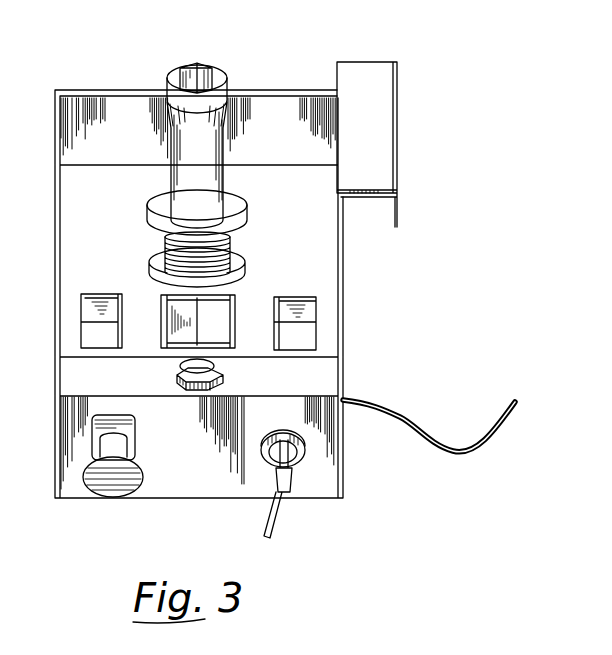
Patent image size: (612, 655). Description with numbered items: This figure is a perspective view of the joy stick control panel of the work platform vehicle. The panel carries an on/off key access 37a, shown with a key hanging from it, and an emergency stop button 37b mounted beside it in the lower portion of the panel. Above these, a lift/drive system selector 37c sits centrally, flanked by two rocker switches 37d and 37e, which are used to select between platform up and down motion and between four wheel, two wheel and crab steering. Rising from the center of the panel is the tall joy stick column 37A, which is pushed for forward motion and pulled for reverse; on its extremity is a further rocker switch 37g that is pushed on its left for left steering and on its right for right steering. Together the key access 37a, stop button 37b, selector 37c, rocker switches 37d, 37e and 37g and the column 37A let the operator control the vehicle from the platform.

The column shaft 37A is at (226, 160).
The rocker switch 37g is at (209, 70).
The rocker switch 37d is at (108, 300).
The lift/drive system selector 37c is at (167, 329).
The rocker switch 37e is at (305, 297).
The emergency stop button 37b is at (145, 476).
The on/off key access 37a is at (307, 465).